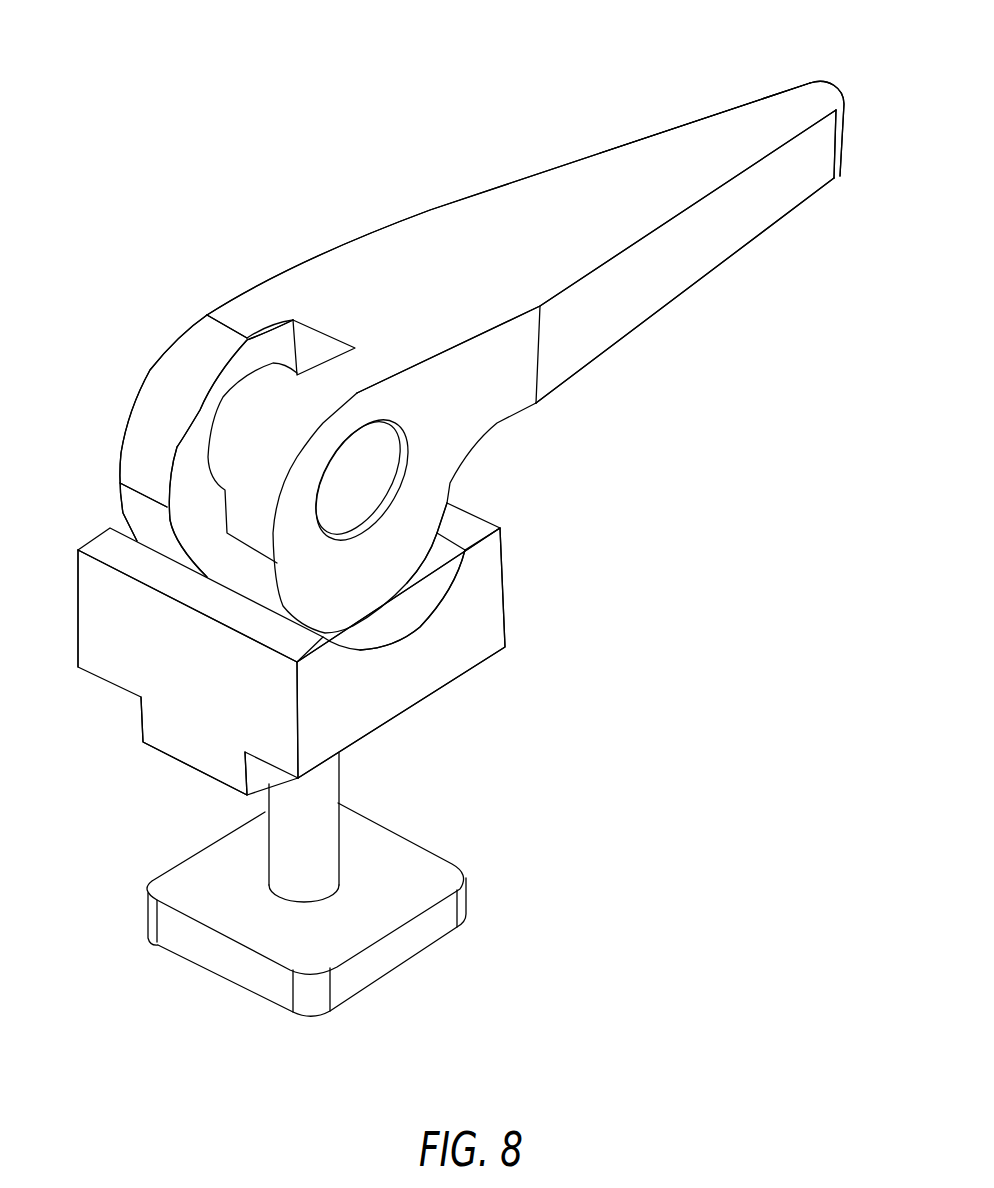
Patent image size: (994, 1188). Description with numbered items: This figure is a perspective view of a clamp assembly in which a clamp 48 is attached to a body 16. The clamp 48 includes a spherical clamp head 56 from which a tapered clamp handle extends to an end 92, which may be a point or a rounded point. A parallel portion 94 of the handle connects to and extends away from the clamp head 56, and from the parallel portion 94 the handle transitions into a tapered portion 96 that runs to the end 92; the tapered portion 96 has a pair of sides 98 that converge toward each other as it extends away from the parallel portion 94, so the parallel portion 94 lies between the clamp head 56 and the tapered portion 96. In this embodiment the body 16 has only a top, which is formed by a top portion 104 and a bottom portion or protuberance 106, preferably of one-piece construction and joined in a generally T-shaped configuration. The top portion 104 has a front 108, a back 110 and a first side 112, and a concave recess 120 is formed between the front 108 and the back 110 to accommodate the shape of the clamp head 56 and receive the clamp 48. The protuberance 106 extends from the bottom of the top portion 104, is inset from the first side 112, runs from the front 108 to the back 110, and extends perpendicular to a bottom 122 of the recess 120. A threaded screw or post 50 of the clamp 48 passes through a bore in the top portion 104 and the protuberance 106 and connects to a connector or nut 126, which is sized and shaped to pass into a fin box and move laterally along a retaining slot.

The body 16 is at (378, 650).
The clamp 48 is at (550, 122).
The screw or post 50 is at (317, 803).
The clamp head 56 is at (158, 403).
The end 92 is at (843, 127).
The parallel portion 94 is at (323, 270).
The tapered portion 96 is at (725, 140).
The sides 98 is at (668, 282).
The top portion 104 is at (78, 617).
The protuberance 106 is at (187, 742).
The front 108 is at (125, 645).
The back 110 is at (502, 560).
The first side 112 is at (473, 637).
The recess 120 is at (423, 585).
The bottom of the recess 122 is at (422, 623).
The connector or nut 126 is at (393, 952).